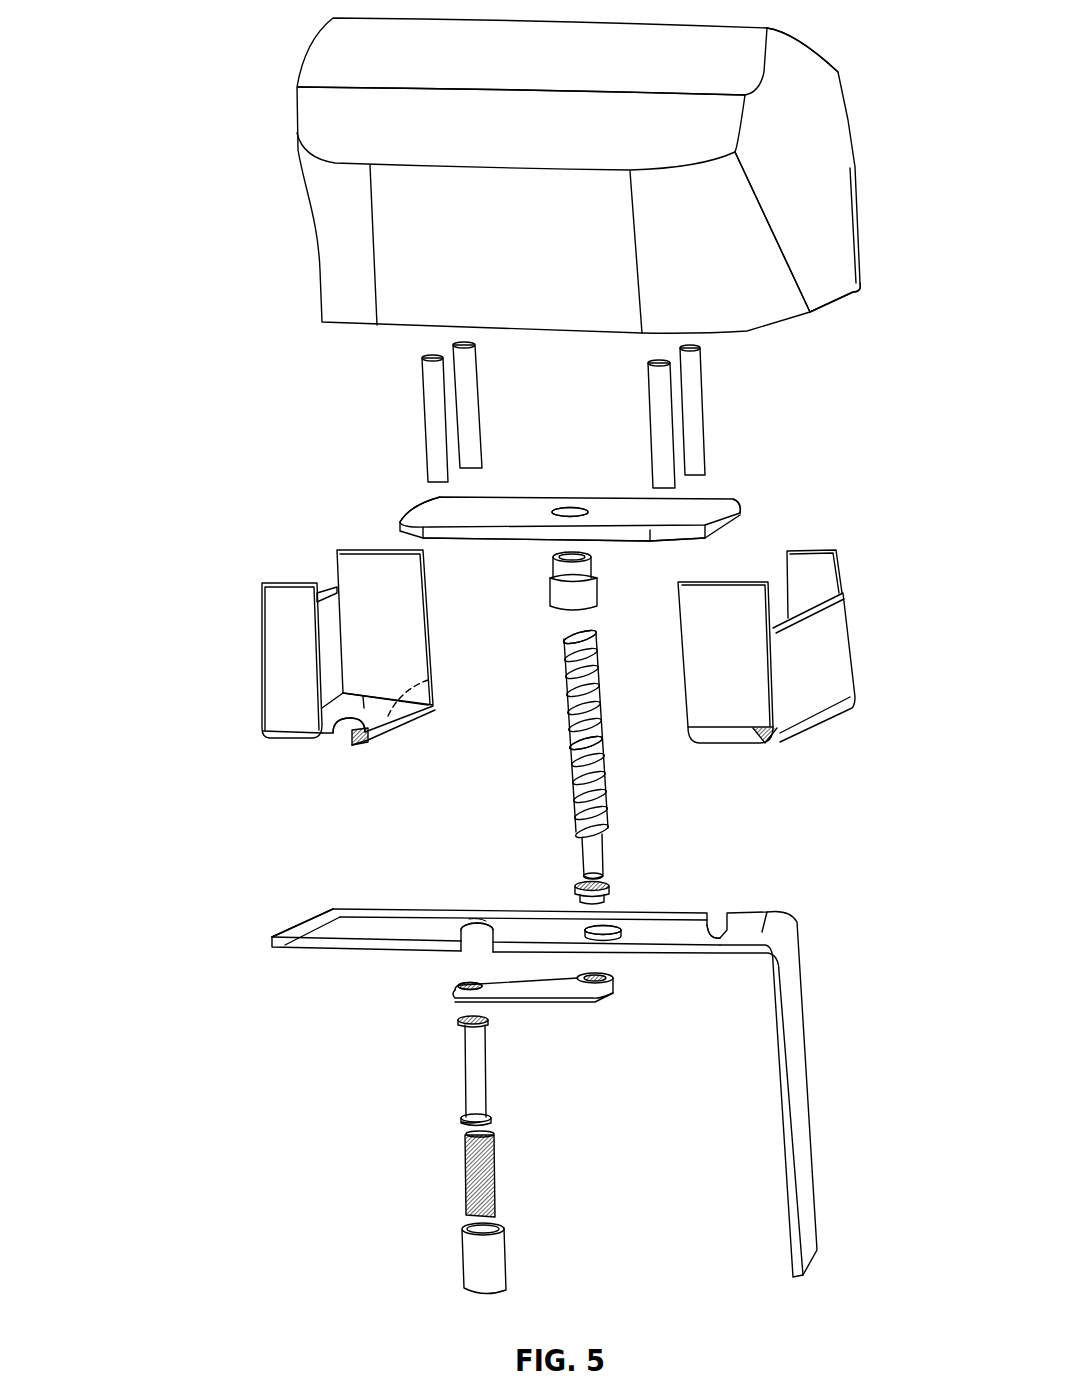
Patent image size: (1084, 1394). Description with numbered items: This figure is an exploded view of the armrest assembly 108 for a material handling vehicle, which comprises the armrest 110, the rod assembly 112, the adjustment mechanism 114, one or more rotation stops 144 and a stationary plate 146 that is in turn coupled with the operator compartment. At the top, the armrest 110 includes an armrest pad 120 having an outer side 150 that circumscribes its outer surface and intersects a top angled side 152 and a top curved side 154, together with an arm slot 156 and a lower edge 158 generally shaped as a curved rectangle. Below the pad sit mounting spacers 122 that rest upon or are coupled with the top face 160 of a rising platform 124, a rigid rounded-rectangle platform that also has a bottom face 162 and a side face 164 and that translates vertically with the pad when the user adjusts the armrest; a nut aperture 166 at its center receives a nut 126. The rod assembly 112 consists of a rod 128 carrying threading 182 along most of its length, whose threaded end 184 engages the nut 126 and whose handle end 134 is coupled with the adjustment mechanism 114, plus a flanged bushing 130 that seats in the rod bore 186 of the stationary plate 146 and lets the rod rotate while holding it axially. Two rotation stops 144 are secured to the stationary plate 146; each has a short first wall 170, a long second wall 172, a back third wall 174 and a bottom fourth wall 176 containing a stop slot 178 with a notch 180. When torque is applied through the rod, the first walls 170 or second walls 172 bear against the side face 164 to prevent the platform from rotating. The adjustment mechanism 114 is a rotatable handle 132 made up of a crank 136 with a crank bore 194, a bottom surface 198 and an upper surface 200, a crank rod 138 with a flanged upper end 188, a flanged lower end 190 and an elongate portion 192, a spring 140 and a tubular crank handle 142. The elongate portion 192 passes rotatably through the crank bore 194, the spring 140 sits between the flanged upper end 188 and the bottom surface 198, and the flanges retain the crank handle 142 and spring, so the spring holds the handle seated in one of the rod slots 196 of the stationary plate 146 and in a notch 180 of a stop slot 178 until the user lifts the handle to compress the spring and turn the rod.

The assembly 108 is at (200, 319).
The armrest 110 is at (158, 53).
The rod assembly 112 is at (655, 818).
The adjustment mechanism 114 is at (433, 1123).
The armrest pad 120 is at (845, 85).
The mounting spacers 122 is at (430, 383).
The rising platform 124 is at (745, 505).
The nut 126 is at (590, 570).
The rod 128 is at (604, 762).
The bushing 130 is at (612, 898).
The rotatable handle 132 is at (562, 1078).
The handle end 134 is at (601, 850).
The crank 136 is at (500, 962).
The crank rod 138 is at (424, 1082).
The spring 140 is at (496, 1170).
The crank handle 142 is at (486, 1250).
The rotation stops 144 is at (546, 684).
The stationary plate 146 is at (555, 1046).
The outer side 150 is at (837, 180).
The top angled side 152 is at (803, 38).
The top curved side 154 is at (345, 115).
The arm slot 156 is at (370, 60).
The lower edge 158 is at (822, 310).
The top face 160 is at (722, 502).
The bottom face 162 is at (525, 541).
The side face 164 is at (398, 520).
The nut aperture 166 is at (568, 504).
The first wall 170 is at (268, 722).
The second wall 172 is at (340, 568).
The third wall 174 is at (330, 648).
The fourth wall 176 is at (390, 713).
The stop slot 178 is at (346, 748).
The notch 180 is at (368, 740).
The threading 182 is at (578, 732).
The threaded end 184 is at (590, 666).
The rod bore 186 is at (607, 938).
The flanged upper end 188 is at (468, 1018).
The flanged lower end 190 is at (468, 1124).
The elongate portion 192 is at (478, 1098).
The crank bore 194 is at (330, 909).
The rod slots 196 is at (490, 918).
The bottom surface 198 is at (538, 996).
The upper surface 200 is at (449, 982).